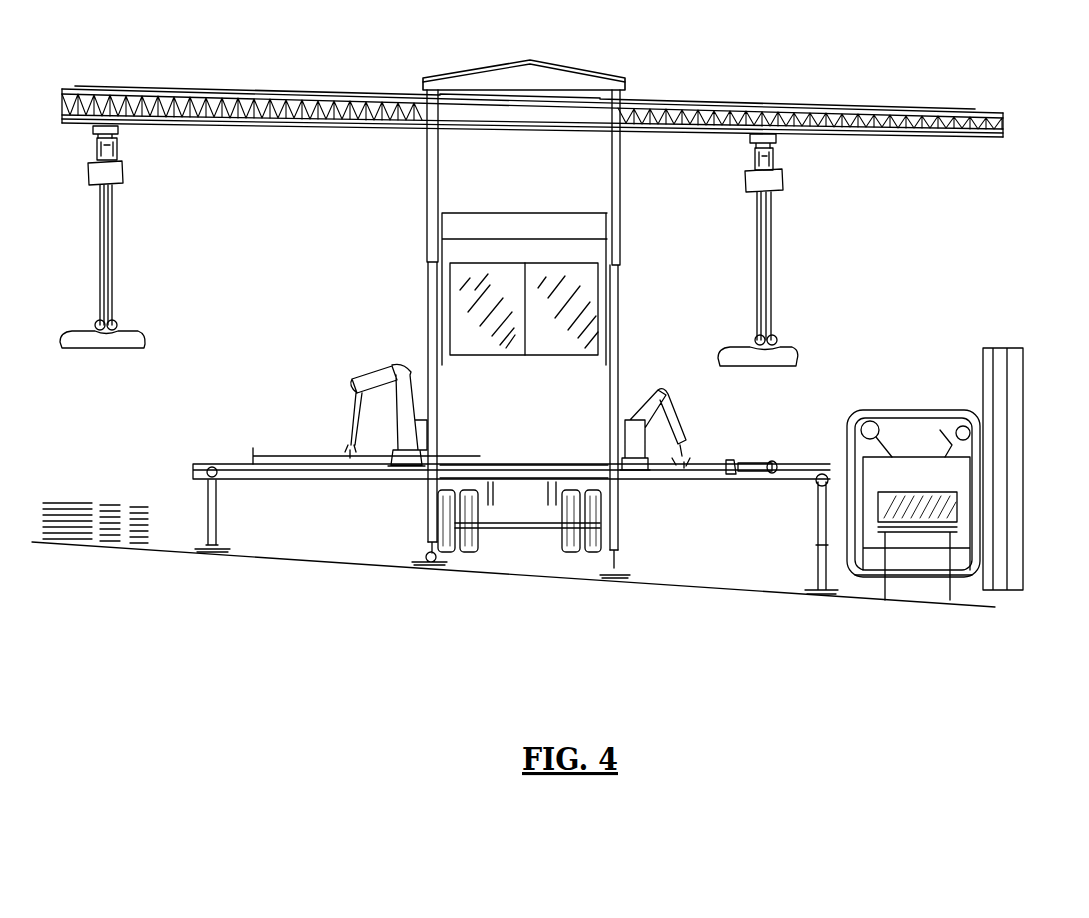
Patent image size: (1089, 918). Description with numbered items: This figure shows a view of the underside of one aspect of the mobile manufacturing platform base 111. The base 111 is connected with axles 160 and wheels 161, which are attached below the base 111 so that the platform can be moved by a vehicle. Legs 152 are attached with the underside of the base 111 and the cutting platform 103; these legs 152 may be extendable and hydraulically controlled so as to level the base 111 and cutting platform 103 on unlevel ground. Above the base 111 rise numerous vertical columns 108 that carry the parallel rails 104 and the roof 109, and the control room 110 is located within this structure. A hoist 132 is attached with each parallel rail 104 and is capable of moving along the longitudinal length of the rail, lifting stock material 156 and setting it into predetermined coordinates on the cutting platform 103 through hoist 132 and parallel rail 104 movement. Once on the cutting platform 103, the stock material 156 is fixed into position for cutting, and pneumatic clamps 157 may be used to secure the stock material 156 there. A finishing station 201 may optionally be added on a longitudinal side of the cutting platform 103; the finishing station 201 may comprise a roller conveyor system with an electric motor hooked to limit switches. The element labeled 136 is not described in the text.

The cutting platform 103 is at (241, 455).
The parallel rails 104 is at (346, 137).
The vertical columns 108 is at (622, 216).
The roof 109 is at (574, 64).
The control room 110 is at (510, 252).
The base 111 is at (510, 463).
The hoist 132 is at (118, 218).
The foot 136 is at (123, 358).
The legs 152 is at (223, 518).
The stock material 156 is at (93, 560).
The pneumatic clamps 157 is at (750, 456).
The axles 160 is at (520, 531).
The wheels 161 is at (571, 556).
The finishing station 201 is at (932, 388).